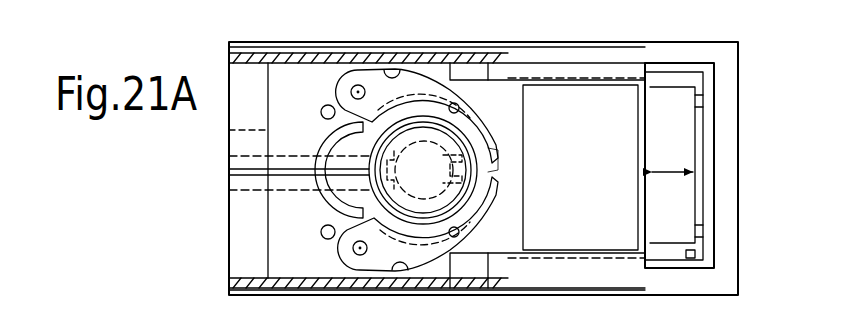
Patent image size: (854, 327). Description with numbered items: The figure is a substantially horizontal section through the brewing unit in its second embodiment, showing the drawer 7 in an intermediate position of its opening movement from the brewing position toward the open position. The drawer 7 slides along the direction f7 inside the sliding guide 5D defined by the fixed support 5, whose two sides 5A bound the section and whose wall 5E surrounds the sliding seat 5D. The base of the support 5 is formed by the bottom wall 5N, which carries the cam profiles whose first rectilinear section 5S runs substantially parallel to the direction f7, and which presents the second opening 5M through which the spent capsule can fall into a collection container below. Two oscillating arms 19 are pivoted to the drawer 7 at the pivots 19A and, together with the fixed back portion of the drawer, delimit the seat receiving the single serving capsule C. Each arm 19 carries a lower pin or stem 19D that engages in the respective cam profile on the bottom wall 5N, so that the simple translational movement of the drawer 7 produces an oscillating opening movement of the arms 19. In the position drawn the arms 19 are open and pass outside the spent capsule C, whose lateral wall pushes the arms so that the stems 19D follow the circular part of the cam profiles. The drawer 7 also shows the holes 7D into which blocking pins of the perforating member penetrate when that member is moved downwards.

The support 5 is at (748, 63).
The sides 5A is at (342, 60).
The sliding guide 5D is at (692, 257).
The wall 5E is at (689, 62).
The second opening 5M is at (624, 174).
The bottom wall 5N is at (246, 128).
The first rectilinear section 5S is at (243, 181).
The drawer 7 is at (603, 87).
The holes 7D is at (325, 118).
The oscillating arms 19 is at (418, 82).
The pivot 19A is at (351, 92).
The lower pin or stem 19D is at (506, 116).
The single serving capsule C is at (446, 163).
The direction of movement of the drawer f7 is at (684, 166).